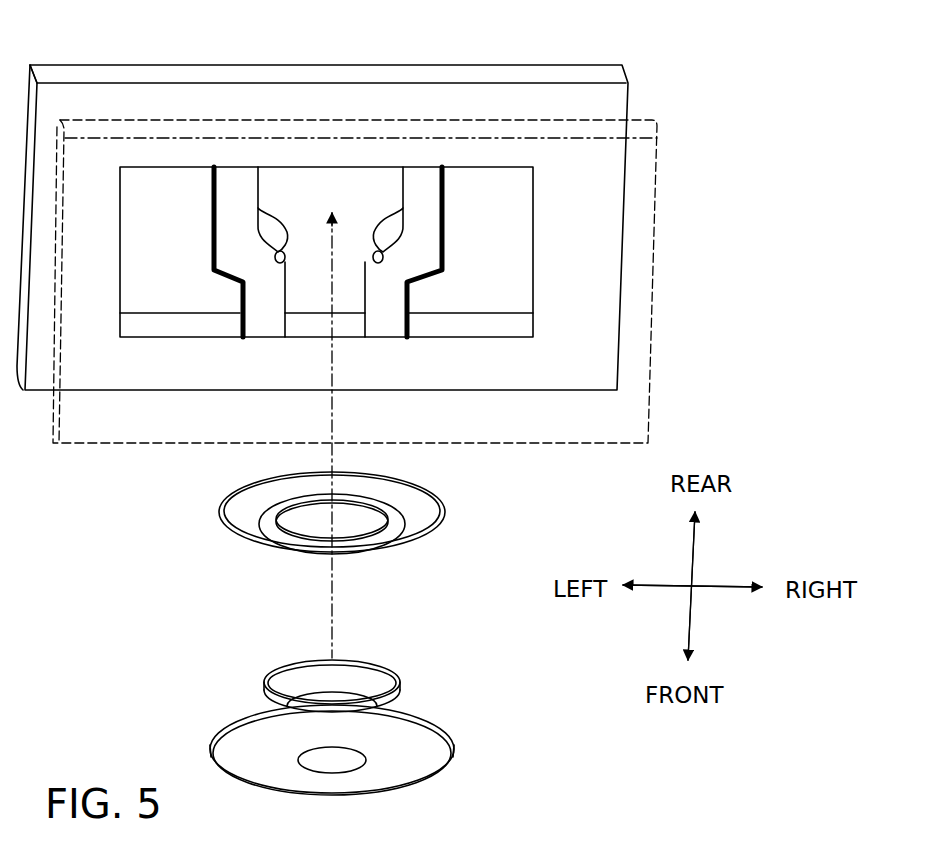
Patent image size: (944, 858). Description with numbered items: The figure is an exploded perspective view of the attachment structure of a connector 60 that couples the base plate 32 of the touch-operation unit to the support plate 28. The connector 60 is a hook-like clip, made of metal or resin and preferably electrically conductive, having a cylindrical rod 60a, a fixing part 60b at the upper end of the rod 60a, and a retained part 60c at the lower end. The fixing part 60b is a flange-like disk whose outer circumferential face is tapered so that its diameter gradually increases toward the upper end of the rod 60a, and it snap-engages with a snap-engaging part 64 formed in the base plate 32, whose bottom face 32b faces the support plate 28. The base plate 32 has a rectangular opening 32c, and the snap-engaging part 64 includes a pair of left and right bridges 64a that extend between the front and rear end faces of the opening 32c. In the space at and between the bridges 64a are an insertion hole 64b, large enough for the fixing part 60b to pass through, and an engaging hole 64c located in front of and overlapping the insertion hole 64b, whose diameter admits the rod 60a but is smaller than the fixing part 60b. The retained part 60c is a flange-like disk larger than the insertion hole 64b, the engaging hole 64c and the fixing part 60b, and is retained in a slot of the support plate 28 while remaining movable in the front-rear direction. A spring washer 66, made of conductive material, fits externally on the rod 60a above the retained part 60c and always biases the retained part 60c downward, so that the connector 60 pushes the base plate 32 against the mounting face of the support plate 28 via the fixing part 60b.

The support plate 28 is at (662, 283).
The base plate 32 is at (638, 99).
The bottom face 32b is at (574, 102).
The rectangular opening 32c is at (498, 201).
The snap-engaging part 64 is at (327, 178).
The bridges 64a is at (237, 180).
The insertion hole 64b is at (390, 228).
The engaging hole 64c is at (286, 262).
The spring washer 66 is at (455, 511).
The connector 60 is at (448, 711).
The rod 60a is at (342, 698).
The fixing part 60b is at (383, 687).
The retained part 60c is at (403, 772).